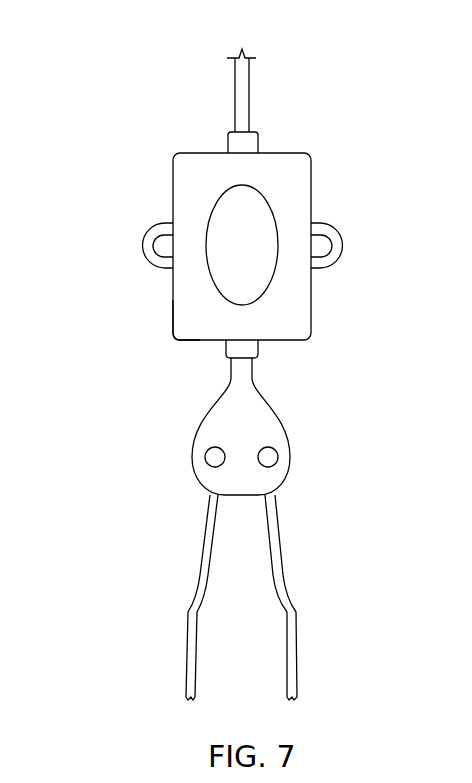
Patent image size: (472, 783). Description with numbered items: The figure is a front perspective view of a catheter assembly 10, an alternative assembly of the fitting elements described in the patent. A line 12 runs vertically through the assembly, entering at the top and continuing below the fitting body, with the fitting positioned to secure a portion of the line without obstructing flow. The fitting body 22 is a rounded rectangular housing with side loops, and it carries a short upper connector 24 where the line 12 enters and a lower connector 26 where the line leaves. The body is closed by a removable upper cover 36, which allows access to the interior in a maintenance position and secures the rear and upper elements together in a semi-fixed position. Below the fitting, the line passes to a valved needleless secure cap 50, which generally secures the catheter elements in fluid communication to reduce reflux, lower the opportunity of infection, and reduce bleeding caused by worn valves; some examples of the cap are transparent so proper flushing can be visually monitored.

The catheter securement assembly 10 is at (113, 93).
The catheter tube 12 is at (243, 80).
The housing 22 is at (187, 180).
The upper connector 24 is at (246, 145).
The lower connector 26 is at (232, 348).
The removable upper cover 36 is at (185, 330).
The valved needleless secure cap 50 is at (268, 457).